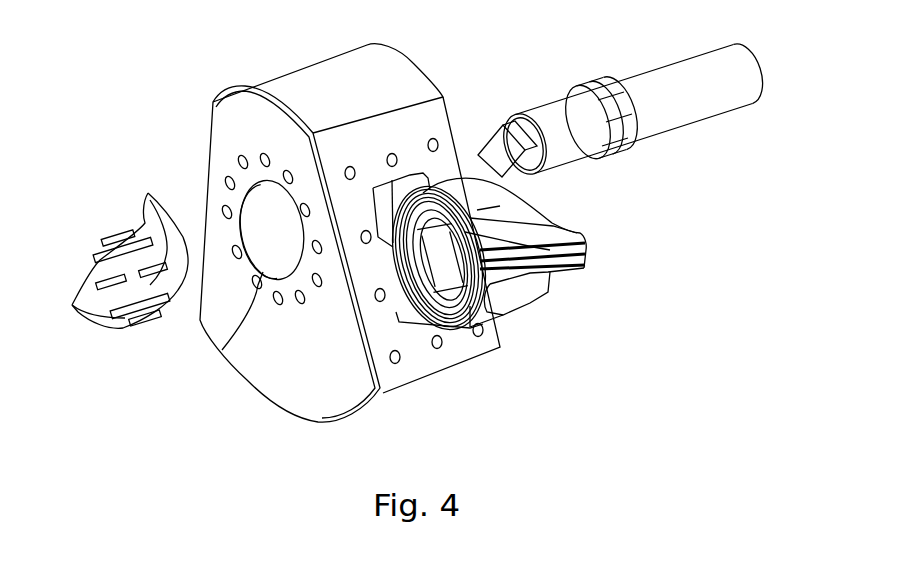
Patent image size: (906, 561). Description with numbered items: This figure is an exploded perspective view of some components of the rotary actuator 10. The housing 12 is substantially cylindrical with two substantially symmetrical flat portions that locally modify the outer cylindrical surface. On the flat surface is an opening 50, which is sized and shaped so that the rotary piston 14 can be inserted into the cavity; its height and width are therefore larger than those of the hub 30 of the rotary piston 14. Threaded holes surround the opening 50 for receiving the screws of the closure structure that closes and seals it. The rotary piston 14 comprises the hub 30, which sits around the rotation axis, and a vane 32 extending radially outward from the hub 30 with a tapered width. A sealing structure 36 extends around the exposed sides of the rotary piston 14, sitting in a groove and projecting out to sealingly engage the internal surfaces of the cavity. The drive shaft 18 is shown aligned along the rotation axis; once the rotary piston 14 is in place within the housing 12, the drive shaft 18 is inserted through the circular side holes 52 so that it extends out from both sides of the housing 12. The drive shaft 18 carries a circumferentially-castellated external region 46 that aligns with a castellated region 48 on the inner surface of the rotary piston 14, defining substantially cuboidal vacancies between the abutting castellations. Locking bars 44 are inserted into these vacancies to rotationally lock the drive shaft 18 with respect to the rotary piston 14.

The rotary actuator 10 is at (184, 148).
The housing 12 is at (398, 81).
The rotary piston 14 is at (565, 212).
The drive shaft 18 is at (657, 88).
The hub 30 is at (490, 212).
The vane 32 is at (558, 222).
The sealing structure 36 is at (589, 240).
The locking bars 44 is at (67, 305).
The circumferentially-castellated external region 46 is at (624, 153).
The castellated region 48 is at (408, 343).
The opening 50 is at (407, 190).
The circular side holes 52 is at (231, 357).